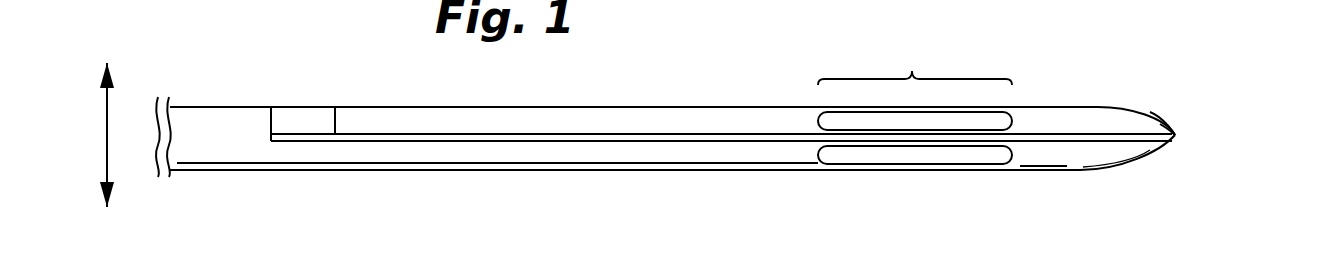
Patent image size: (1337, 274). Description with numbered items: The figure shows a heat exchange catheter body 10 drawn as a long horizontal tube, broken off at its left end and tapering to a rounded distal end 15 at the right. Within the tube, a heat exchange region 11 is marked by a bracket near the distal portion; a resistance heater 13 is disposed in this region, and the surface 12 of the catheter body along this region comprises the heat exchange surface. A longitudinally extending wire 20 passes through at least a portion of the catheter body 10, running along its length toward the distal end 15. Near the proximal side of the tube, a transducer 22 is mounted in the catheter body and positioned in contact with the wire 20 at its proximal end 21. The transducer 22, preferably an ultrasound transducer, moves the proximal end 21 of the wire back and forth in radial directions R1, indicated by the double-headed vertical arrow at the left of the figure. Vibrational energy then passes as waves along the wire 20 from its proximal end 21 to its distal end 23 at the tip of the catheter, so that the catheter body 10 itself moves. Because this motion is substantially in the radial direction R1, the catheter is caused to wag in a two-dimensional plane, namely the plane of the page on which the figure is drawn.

The heat exchange catheter body 10 is at (662, 106).
The heat exchange region 11 is at (915, 62).
The heat exchange surface 12 is at (972, 106).
The resistance heater 13 is at (949, 123).
The distal end of catheter 15 is at (1213, 135).
The longitudinally extending wire 20 is at (476, 135).
The proximal end of wire 21 is at (315, 138).
The transducer 22 is at (303, 115).
The distal end of wire 23 is at (1177, 134).
The radial direction R1 is at (84, 135).